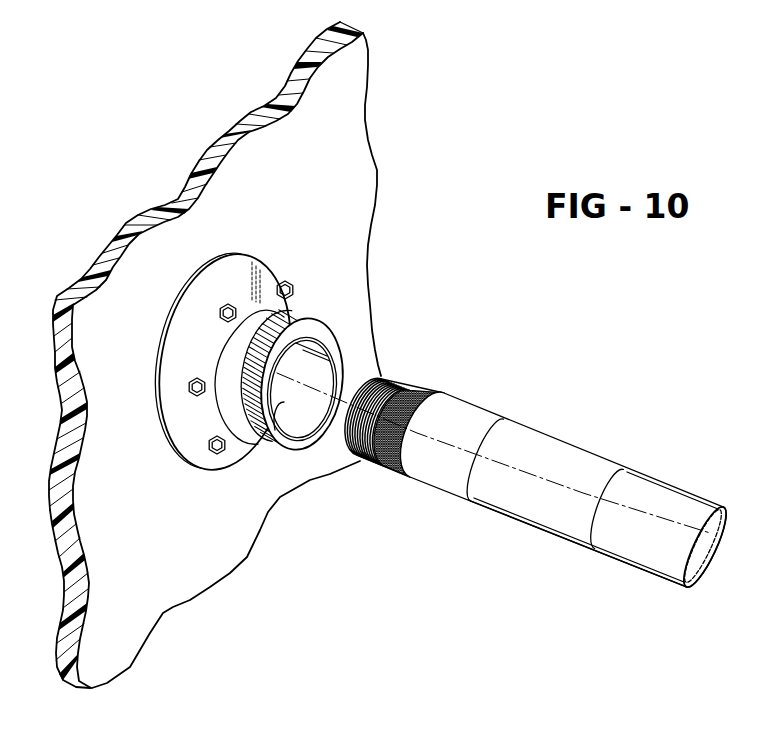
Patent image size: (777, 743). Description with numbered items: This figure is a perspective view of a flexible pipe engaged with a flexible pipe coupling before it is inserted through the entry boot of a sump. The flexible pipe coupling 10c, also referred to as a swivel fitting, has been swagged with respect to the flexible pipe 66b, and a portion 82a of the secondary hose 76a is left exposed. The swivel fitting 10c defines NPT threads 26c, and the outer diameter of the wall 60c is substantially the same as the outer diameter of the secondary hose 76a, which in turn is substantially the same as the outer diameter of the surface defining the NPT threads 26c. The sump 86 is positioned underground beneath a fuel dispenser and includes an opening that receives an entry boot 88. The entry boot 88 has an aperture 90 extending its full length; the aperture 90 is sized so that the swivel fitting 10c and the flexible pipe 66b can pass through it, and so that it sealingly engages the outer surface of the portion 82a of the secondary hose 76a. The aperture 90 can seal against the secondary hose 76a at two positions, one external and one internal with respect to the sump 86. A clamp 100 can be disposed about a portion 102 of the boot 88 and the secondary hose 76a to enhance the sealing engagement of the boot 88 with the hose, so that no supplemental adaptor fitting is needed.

The sump 86 is at (350, 85).
The entry boot 88 is at (258, 273).
The aperture 90 is at (283, 403).
The clamp 100 is at (245, 400).
The portion of the boot 102 is at (283, 318).
The NPT threads 26c is at (383, 372).
The flexible pipe coupling 10c is at (486, 393).
The flexible pipe 66b is at (598, 403).
The wall 60c is at (443, 473).
The portion of the secondary hose 82a is at (535, 508).
The secondary hose 76a is at (553, 548).